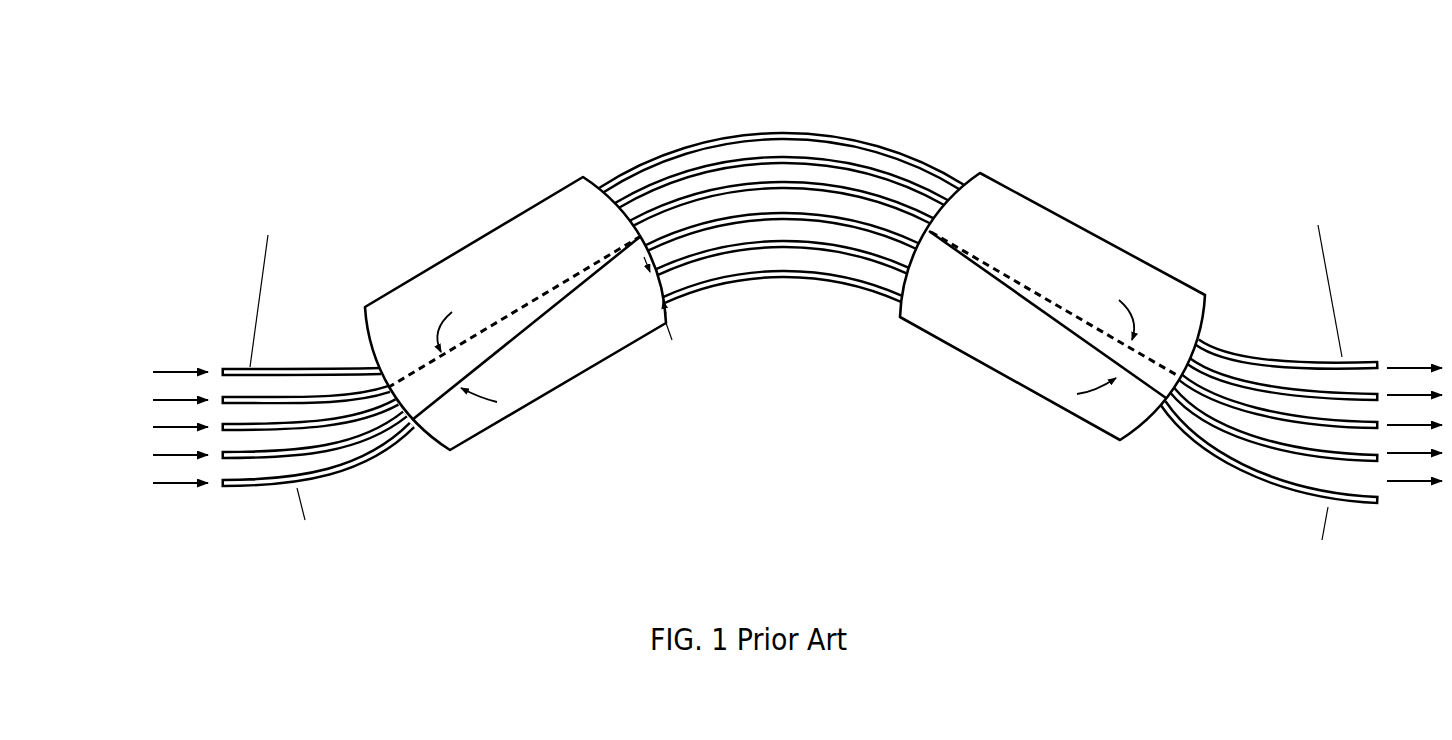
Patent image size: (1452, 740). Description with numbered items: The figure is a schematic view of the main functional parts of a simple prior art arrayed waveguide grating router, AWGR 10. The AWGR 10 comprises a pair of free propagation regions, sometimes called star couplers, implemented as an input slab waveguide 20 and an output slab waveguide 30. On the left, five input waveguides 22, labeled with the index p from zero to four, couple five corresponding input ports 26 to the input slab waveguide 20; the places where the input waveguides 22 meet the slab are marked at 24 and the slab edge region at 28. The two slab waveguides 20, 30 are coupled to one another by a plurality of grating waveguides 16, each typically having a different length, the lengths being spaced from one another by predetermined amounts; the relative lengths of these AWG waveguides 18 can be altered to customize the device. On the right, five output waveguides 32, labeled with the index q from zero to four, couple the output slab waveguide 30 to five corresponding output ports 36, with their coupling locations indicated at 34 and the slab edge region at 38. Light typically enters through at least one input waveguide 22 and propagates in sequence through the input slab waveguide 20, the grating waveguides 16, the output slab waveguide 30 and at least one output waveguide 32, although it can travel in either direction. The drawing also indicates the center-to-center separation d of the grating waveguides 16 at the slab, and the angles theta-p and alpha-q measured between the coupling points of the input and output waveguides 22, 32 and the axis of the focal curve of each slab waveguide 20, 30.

The AWGR 10 is at (996, 71).
The grating waveguides 16 is at (821, 126).
The AWG waveguides 18 is at (911, 200).
The input slab waveguide 20 is at (511, 218).
The input waveguides 22 is at (313, 420).
The input waveguide ends at input slab 24 is at (369, 363).
The input ports 26 is at (224, 427).
The input edge of input slab 28 is at (418, 432).
The output slab waveguide 30 is at (1117, 246).
The output waveguides 32 is at (1288, 417).
The output waveguide ends at output slab 34 is at (1230, 402).
The output ports 36 is at (1376, 428).
The output edge of output slab 38 is at (1177, 440).